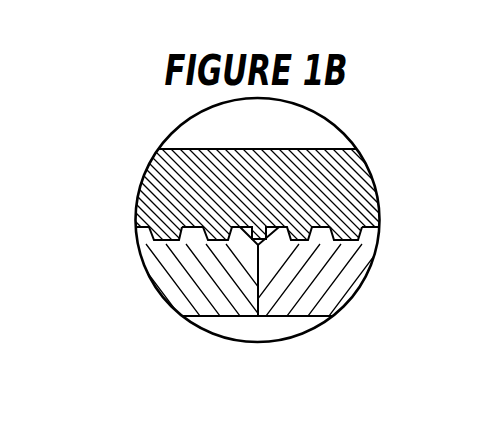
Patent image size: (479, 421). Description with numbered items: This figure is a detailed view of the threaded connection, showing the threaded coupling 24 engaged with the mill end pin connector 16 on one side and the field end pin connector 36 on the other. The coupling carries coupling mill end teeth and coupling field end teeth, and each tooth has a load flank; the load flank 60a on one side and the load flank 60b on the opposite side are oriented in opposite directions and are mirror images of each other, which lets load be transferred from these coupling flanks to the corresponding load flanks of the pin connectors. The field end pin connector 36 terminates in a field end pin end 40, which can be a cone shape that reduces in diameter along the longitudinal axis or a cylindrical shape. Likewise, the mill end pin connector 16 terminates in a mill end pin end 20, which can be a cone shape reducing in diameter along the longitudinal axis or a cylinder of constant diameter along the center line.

The threaded coupling 24 is at (260, 149).
The load flank 60a is at (183, 233).
The load flank 60b is at (337, 233).
The mill end pin connector 16 is at (180, 288).
The field end pin connector 36 is at (338, 290).
The field end pin end 40 is at (256, 273).
The mill end pin end 20 is at (261, 300).